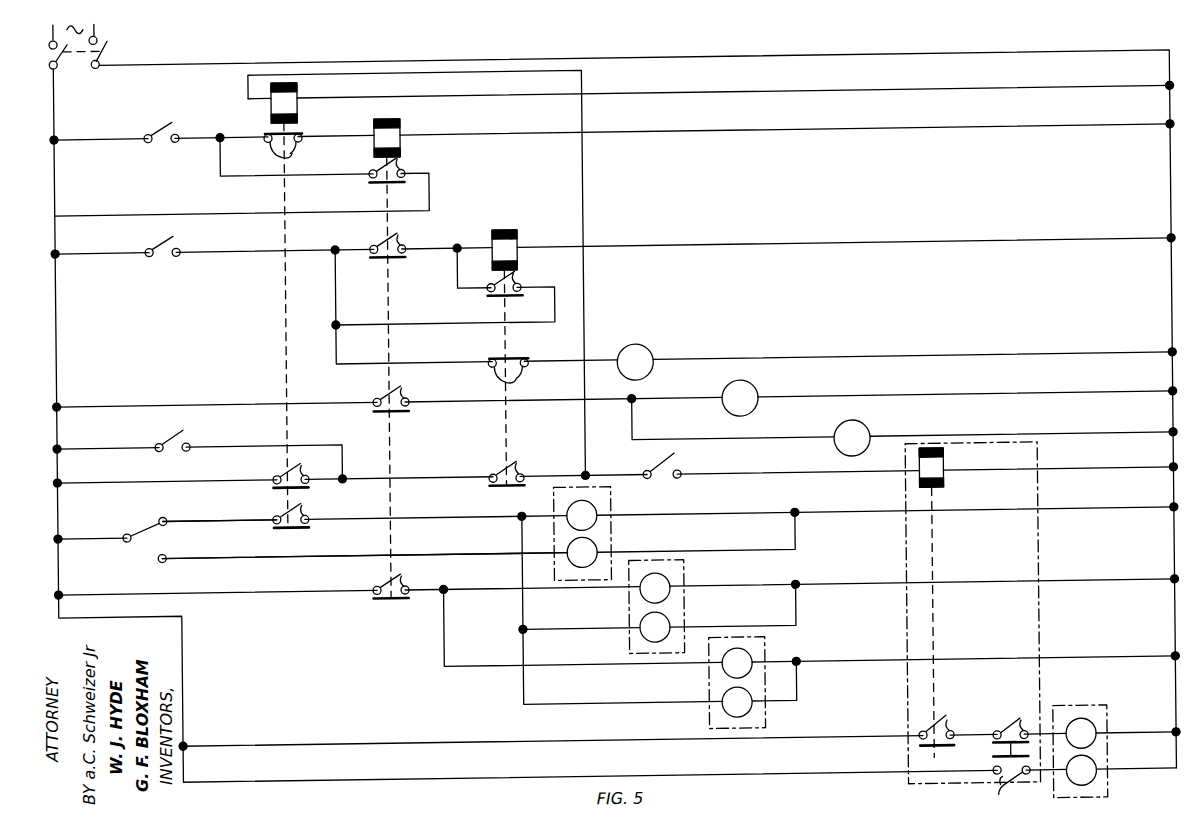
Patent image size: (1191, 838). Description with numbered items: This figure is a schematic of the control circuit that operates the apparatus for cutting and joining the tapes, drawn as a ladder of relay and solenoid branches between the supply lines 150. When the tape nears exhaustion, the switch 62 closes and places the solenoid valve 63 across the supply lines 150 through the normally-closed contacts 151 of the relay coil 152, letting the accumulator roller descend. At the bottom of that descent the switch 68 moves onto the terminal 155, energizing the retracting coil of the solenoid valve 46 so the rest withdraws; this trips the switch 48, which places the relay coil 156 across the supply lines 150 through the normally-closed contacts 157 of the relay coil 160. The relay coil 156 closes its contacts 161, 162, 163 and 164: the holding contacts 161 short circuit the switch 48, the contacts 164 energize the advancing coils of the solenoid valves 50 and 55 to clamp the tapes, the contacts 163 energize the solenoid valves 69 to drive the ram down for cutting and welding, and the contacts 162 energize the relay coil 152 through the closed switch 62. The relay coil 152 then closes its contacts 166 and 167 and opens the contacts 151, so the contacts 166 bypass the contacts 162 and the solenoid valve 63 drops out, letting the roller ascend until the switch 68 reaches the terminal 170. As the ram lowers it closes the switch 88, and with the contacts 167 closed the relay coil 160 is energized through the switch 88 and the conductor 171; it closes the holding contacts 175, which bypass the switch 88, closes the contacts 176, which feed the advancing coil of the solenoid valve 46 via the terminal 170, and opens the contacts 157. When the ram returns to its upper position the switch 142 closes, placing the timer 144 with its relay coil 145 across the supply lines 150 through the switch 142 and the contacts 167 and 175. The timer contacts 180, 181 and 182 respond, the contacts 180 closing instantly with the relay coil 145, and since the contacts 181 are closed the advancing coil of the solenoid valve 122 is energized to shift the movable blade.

The solenoid valve 46 is at (607, 499).
The switch 48 is at (168, 129).
The solenoid valve 50 is at (680, 573).
The solenoid valve 55 is at (760, 652).
The switch 62 is at (150, 251).
The solenoid valve 63 is at (645, 358).
The switch 68 is at (150, 533).
The solenoid valves 69 is at (838, 438).
The switch 88 is at (177, 439).
The solenoid valve 122 is at (1101, 727).
The switch 142 is at (652, 472).
The timer 144 is at (902, 532).
The relay coil 145 is at (940, 470).
The supply lines 150 is at (57, 376).
The normally-closed contacts 151 is at (512, 386).
The relay coil 152 is at (516, 246).
The terminal 155 is at (158, 564).
The relay coil 156 is at (400, 145).
The normally-closed contacts 157 is at (280, 162).
The relay coil 160 is at (297, 104).
The holding contacts 161 is at (370, 164).
The contacts 162 is at (385, 238).
The contacts 163 is at (396, 392).
The contacts 164 is at (394, 580).
The contacts 166 is at (508, 279).
The contacts 167 is at (508, 469).
The terminal 170 is at (163, 521).
The conductor 171 is at (582, 226).
The holding contacts 175 is at (292, 468).
The contacts 176 is at (292, 508).
The contacts 180 is at (936, 729).
The contacts 181 is at (1000, 728).
The contacts 182 is at (1011, 787).